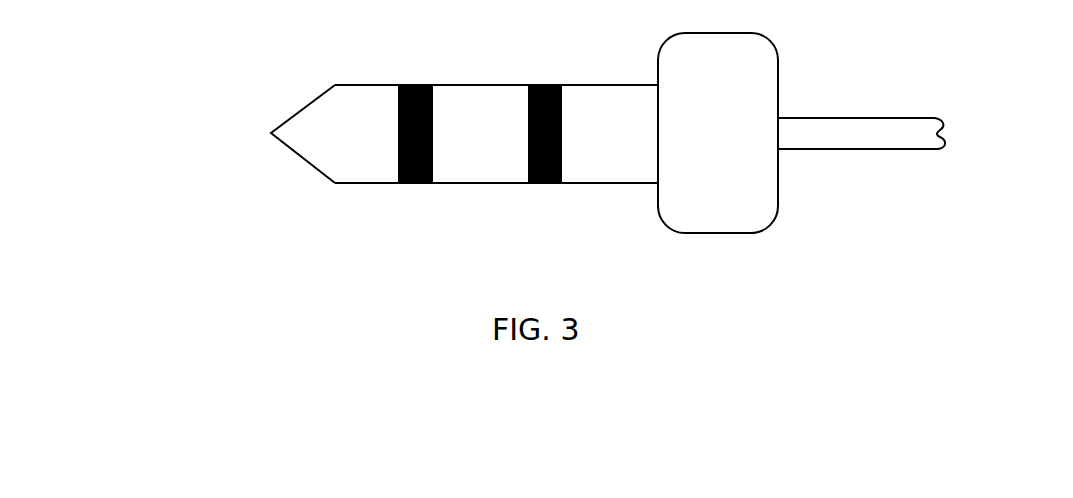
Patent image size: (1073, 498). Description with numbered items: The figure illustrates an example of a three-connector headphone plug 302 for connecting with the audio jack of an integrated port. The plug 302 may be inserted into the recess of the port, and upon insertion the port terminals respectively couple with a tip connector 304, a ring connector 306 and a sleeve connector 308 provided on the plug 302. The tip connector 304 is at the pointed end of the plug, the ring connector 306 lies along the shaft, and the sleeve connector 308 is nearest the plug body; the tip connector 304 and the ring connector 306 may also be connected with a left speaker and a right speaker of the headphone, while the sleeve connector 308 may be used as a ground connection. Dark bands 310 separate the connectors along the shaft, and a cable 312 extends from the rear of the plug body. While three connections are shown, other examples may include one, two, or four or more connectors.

The three-connector headphone plug 302 is at (778, 66).
The tip connector 304 is at (316, 172).
The ring connector 306 is at (472, 184).
The sleeve connector 308 is at (633, 184).
The insulating bands 310 is at (397, 149).
The cable 312 is at (946, 132).